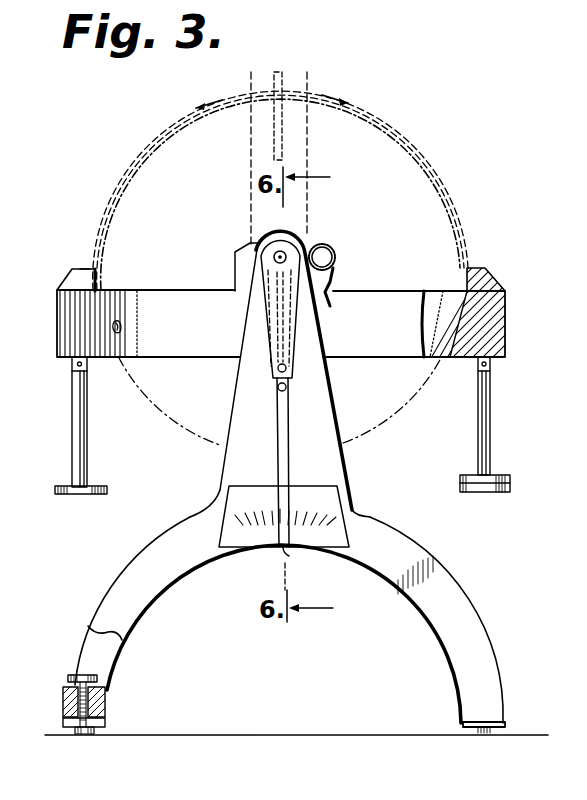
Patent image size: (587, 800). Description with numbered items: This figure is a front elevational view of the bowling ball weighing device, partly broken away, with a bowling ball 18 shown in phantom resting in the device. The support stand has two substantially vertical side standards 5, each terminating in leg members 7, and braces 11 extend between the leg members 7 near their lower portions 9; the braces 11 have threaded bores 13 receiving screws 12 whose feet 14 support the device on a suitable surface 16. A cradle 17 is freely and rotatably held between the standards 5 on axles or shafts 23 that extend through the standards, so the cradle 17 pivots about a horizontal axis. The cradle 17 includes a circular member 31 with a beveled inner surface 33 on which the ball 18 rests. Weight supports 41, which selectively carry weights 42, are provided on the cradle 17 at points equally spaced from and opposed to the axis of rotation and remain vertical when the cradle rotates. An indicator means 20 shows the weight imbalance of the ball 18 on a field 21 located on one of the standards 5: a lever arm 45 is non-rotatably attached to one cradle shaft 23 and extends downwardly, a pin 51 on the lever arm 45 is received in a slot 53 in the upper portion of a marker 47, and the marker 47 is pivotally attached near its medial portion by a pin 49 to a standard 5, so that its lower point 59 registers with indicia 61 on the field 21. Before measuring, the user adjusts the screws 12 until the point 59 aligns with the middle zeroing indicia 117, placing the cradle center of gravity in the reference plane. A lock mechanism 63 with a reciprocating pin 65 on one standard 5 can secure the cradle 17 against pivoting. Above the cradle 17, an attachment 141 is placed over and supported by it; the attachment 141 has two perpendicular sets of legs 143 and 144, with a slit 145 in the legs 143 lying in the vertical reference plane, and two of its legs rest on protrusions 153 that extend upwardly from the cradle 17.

The side standards 5 is at (230, 397).
The leg members 7 is at (464, 592).
The lower portions 9 is at (509, 724).
The braces 11 is at (110, 706).
The screws 12 is at (72, 675).
The threaded bores 13 is at (66, 699).
The feet 14 is at (84, 736).
The surface 16 is at (294, 735).
The cradle 17 is at (508, 274).
The bowling ball 18 is at (375, 437).
The indicator means 20 is at (302, 384).
The field 21 is at (218, 541).
The cradle shafts 23 is at (276, 252).
The circular member 31 is at (190, 344).
The beveled inner surface 33 is at (458, 322).
The weight supports 41 is at (107, 490).
The weights 42 is at (510, 477).
The lever arm 45 is at (254, 257).
The marker 47 is at (288, 431).
The pin 49 is at (278, 390).
The pin 51 is at (278, 369).
The slot 53 is at (276, 301).
The point 59 is at (286, 511).
The indicia 61 is at (250, 498).
The lock mechanism 63 is at (338, 278).
The pin 65 is at (333, 252).
The middle zeroing indicia 117 is at (287, 554).
The attachment 141 is at (320, 67).
The legs 143 is at (250, 151).
The legs 144 is at (455, 203).
The slit 145 is at (283, 137).
The protrusions 153 is at (97, 272).